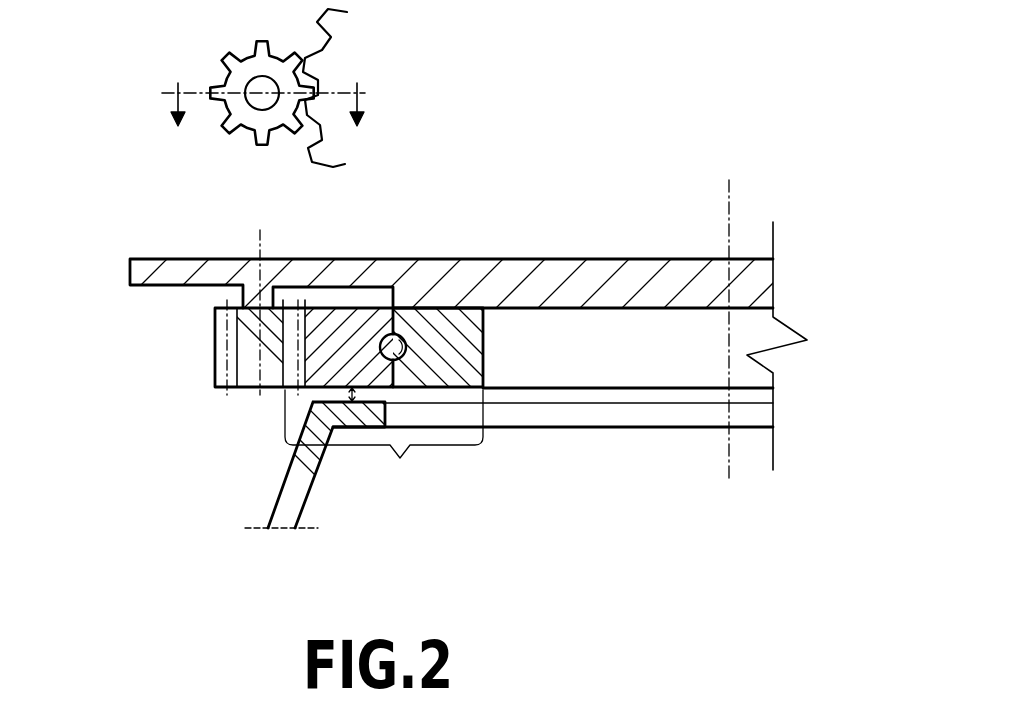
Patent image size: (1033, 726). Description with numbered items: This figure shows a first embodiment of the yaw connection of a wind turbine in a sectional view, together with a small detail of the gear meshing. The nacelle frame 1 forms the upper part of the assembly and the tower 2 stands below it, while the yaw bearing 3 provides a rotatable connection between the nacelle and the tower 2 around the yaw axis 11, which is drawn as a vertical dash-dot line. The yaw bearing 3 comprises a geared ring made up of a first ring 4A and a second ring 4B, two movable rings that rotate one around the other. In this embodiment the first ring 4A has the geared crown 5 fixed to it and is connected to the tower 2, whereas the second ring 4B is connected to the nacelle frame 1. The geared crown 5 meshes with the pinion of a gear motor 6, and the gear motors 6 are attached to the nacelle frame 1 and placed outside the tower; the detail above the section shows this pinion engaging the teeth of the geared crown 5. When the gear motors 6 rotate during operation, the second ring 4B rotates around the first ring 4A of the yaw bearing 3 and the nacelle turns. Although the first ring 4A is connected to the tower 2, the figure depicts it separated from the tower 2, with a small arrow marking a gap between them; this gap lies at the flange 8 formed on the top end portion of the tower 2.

The nacelle frame 1 is at (207, 264).
The tower 2 is at (287, 492).
The yaw bearing 3 is at (384, 444).
The first ring 4A is at (350, 323).
The second ring 4B is at (455, 318).
The geared crown 5 is at (307, 53).
The gear motor 6 is at (228, 53).
The flange 8 is at (340, 413).
The yaw axis 11 is at (728, 218).